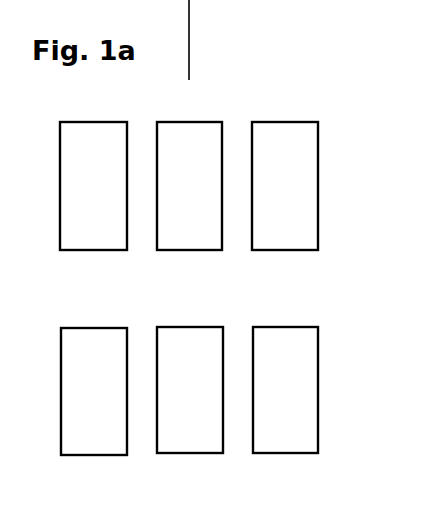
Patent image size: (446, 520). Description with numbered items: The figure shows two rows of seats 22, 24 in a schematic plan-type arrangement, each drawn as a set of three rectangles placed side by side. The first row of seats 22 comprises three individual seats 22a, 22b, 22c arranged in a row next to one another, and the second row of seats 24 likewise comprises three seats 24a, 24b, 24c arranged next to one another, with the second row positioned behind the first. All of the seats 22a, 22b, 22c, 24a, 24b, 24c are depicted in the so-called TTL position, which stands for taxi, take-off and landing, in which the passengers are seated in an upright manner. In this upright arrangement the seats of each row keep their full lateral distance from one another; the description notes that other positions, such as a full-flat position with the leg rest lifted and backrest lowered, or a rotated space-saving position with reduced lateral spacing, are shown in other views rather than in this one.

The row of seats 22 is at (220, 205).
The seat 22a is at (292, 242).
The seat 22b is at (193, 242).
The seat 22c is at (95, 242).
The row of seats 24 is at (219, 410).
The seat 24a is at (283, 447).
The seat 24b is at (198, 447).
The seat 24c is at (95, 447).